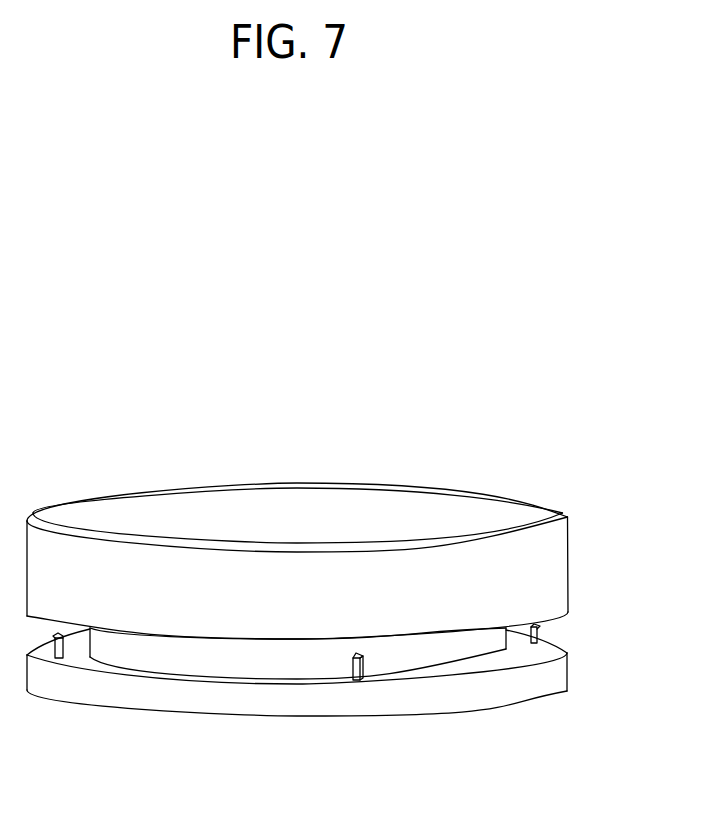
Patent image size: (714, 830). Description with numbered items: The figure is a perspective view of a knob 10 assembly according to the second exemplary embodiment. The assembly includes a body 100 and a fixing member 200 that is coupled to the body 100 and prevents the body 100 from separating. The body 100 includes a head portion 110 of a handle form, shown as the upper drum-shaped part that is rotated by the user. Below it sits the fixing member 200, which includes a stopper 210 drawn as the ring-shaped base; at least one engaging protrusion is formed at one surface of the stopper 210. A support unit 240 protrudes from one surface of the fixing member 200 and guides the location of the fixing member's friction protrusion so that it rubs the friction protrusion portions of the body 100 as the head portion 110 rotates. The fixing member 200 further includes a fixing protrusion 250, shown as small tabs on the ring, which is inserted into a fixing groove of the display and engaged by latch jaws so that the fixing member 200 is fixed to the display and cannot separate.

The knob 10 is at (174, 402).
The body 100 is at (492, 489).
The head portion 110 is at (568, 556).
The fixing member 200 is at (551, 698).
The stopper 210 is at (553, 678).
The support unit 240 is at (569, 657).
The fixing protrusion 250 is at (356, 681).